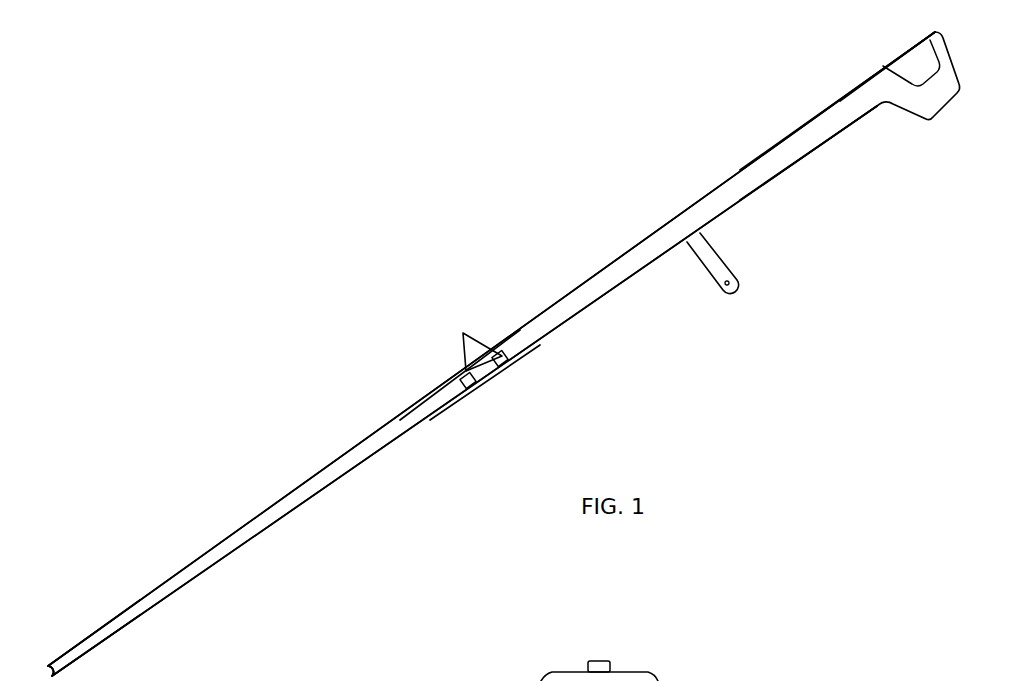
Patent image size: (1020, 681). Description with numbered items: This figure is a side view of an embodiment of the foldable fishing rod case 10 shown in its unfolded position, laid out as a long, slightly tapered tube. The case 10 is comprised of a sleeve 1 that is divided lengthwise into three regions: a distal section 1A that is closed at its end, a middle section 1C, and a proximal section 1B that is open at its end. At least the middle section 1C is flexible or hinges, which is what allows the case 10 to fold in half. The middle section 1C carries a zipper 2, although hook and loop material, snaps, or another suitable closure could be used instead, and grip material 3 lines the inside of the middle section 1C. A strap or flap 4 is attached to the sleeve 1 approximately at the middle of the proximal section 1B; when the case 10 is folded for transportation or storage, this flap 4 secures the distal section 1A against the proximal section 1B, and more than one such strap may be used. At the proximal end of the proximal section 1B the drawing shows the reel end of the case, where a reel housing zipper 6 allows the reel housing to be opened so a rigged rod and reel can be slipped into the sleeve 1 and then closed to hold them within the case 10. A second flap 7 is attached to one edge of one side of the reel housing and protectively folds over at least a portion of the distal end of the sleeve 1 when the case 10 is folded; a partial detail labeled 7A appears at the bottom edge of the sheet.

The sleeve 1 is at (348, 472).
The distal section 1A is at (239, 504).
The proximal section 1B is at (734, 151).
The middle section 1C is at (400, 322).
The zipper 2 is at (503, 367).
The grip material 3 is at (475, 338).
The strap or flap 4 is at (723, 270).
The reel housing zipper 6 is at (859, 69).
The second flap 7 is at (913, 78).
The end cap (alternate view) 7A is at (667, 680).
The foldable fishing rod case 10 is at (571, 204).